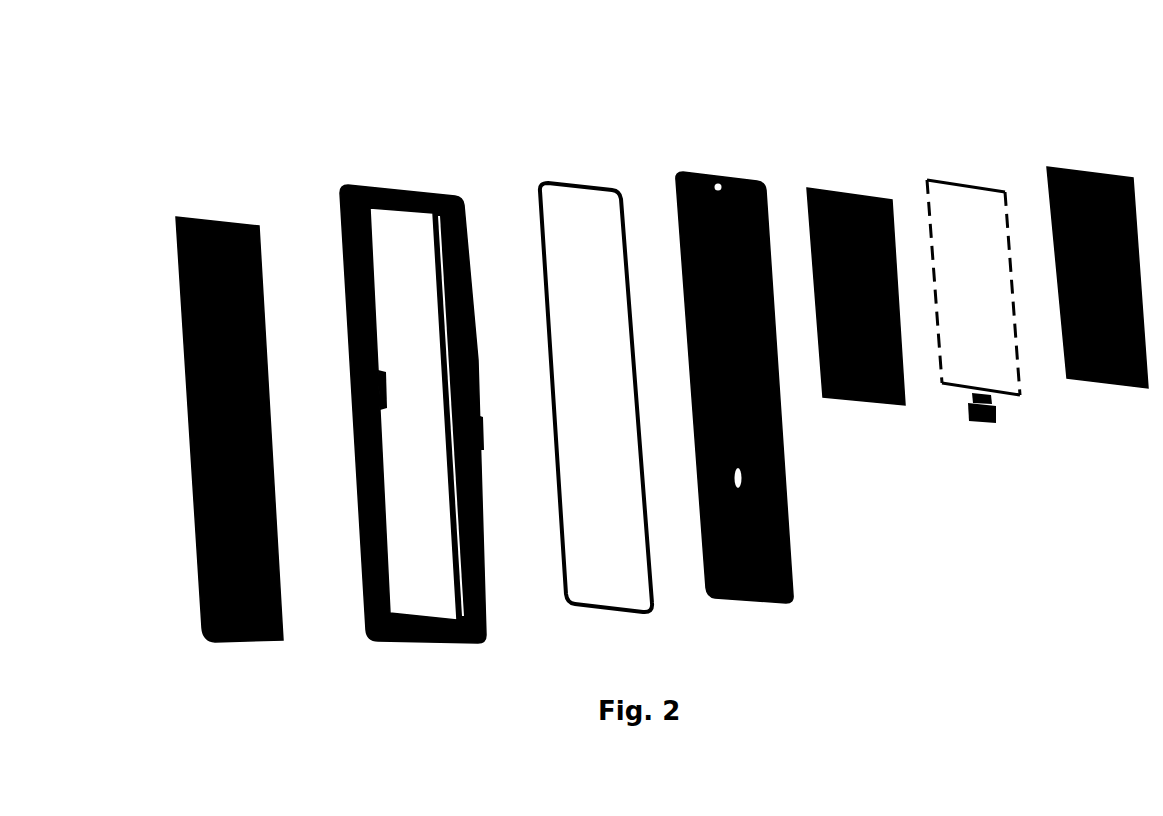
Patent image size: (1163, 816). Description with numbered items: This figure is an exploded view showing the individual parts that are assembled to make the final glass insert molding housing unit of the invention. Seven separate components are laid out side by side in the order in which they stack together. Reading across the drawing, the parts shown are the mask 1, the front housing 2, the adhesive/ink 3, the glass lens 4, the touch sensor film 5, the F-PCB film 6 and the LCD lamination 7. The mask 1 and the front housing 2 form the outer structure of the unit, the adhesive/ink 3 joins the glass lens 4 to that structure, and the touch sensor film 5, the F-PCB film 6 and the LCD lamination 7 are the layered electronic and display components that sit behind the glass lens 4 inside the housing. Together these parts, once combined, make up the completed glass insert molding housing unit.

The front cover 1 is at (216, 219).
The frame 2 is at (396, 187).
The transparent panel 3 is at (572, 183).
The housing body 4 is at (698, 171).
The plate 5 is at (838, 192).
The circuit board 6 is at (965, 188).
The back cover 7 is at (1090, 172).